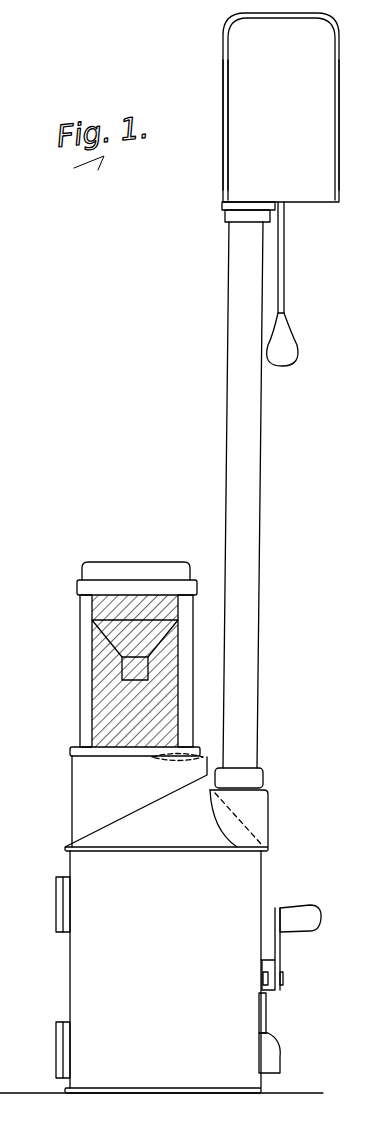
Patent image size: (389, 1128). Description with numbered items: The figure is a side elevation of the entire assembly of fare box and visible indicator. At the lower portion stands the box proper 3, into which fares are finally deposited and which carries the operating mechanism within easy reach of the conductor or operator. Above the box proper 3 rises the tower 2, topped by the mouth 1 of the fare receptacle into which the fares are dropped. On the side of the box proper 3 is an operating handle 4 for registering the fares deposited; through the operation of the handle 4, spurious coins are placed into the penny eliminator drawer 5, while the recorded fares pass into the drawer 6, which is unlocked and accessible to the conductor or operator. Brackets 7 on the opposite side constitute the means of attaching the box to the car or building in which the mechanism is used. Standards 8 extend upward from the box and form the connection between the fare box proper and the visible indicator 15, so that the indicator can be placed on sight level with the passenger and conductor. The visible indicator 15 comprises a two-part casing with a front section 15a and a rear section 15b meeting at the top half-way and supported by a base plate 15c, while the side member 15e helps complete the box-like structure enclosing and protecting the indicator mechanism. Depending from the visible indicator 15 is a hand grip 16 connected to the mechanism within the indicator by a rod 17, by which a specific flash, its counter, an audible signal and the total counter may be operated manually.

The mouth of fare receptacle 1 is at (77, 583).
The tower 2 is at (80, 688).
The box proper 3 is at (78, 947).
The operating handle 4 is at (282, 948).
The penny eliminator drawer 5 is at (266, 1012).
The drawer 6 is at (282, 1054).
The brackets 7 is at (56, 881).
The standards 8 is at (227, 397).
The visible indicator 15 is at (224, 45).
The front section 15a is at (339, 102).
The rear section 15b is at (227, 96).
The base plate 15c is at (321, 203).
The left hand side member 15e is at (238, 160).
The hand grips 16 is at (285, 352).
The rod 17 is at (286, 270).